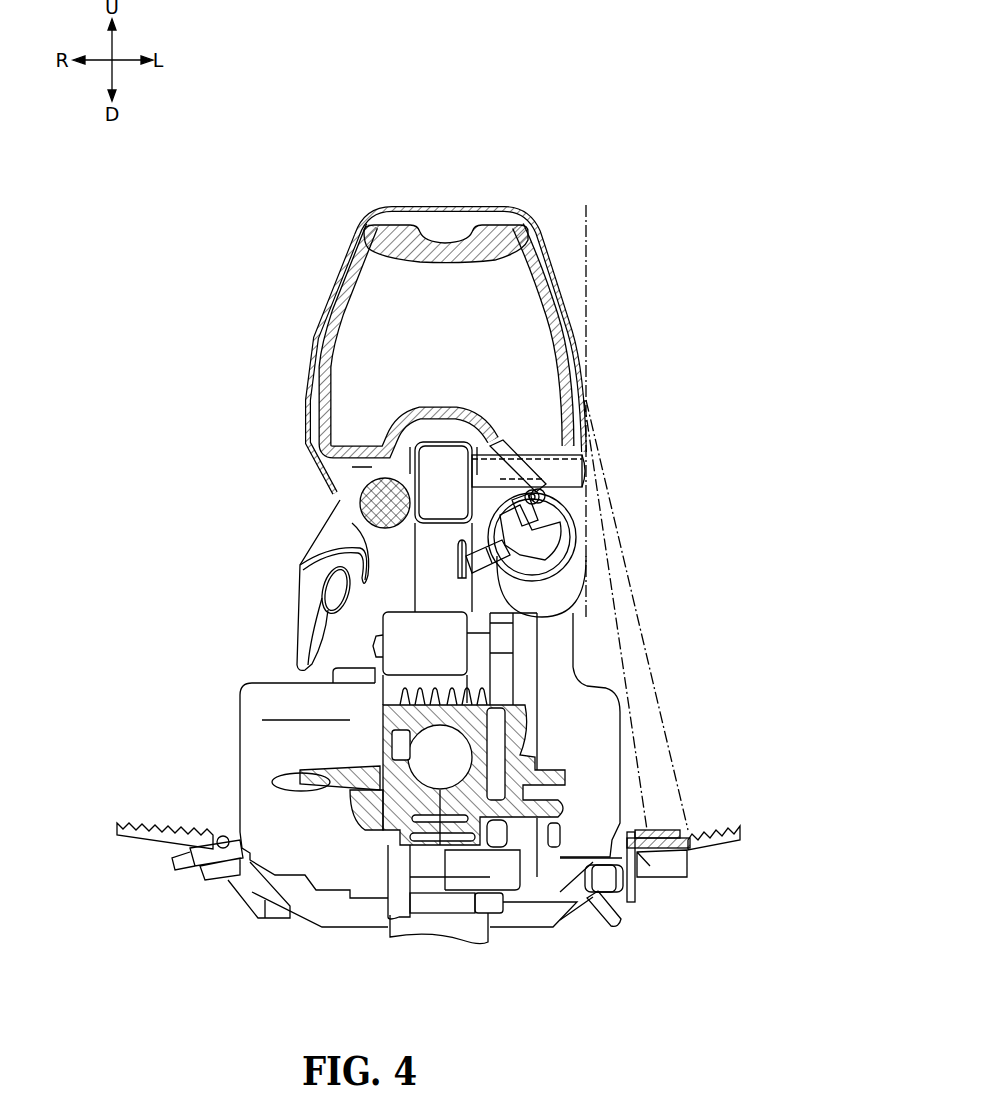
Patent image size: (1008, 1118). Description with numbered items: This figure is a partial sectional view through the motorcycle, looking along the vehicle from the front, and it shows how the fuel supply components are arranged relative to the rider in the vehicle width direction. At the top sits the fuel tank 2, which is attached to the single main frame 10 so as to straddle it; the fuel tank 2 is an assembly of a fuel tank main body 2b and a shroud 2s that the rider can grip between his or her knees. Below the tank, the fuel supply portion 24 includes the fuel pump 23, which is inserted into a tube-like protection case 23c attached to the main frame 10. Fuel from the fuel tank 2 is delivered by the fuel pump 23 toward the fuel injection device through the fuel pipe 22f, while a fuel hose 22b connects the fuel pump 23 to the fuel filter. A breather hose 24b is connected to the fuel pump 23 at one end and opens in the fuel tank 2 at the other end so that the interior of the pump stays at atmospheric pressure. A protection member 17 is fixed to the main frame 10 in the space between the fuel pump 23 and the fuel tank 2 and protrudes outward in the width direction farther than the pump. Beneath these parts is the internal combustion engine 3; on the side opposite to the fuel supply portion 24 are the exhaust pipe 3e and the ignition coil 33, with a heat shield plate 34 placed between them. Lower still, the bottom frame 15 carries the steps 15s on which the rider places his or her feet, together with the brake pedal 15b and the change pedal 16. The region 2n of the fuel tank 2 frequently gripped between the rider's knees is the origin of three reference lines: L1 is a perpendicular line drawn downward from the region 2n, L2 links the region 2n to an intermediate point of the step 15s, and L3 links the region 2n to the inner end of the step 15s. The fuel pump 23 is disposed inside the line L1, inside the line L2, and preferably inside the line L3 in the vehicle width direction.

The fuel tank 2 is at (487, 321).
The fuel tank main body 2b is at (453, 238).
The shroud 2s is at (515, 215).
The region 2n is at (602, 392).
The main frame 10 is at (442, 444).
The protection member 17 is at (573, 470).
The breather hose 24b is at (507, 444).
The ignition coil 33 is at (366, 510).
The heat shield plate 34 is at (287, 568).
The exhaust pipe 3e is at (322, 581).
The fuel pump 23 is at (598, 552).
The fuel pipe 22f is at (560, 512).
The tube-like member (protection case) 23c is at (568, 590).
The fuel supply portion 24 is at (606, 532).
The fuel hose 22b is at (460, 553).
The internal combustion engine 3 is at (620, 726).
The change pedal 16 is at (690, 845).
The bottom frame 15 is at (603, 918).
The steps 15s is at (138, 822).
The brake pedal 15b is at (217, 860).
The perpendicular line L1 is at (586, 399).
The line L2 is at (645, 637).
The line L3 is at (625, 663).